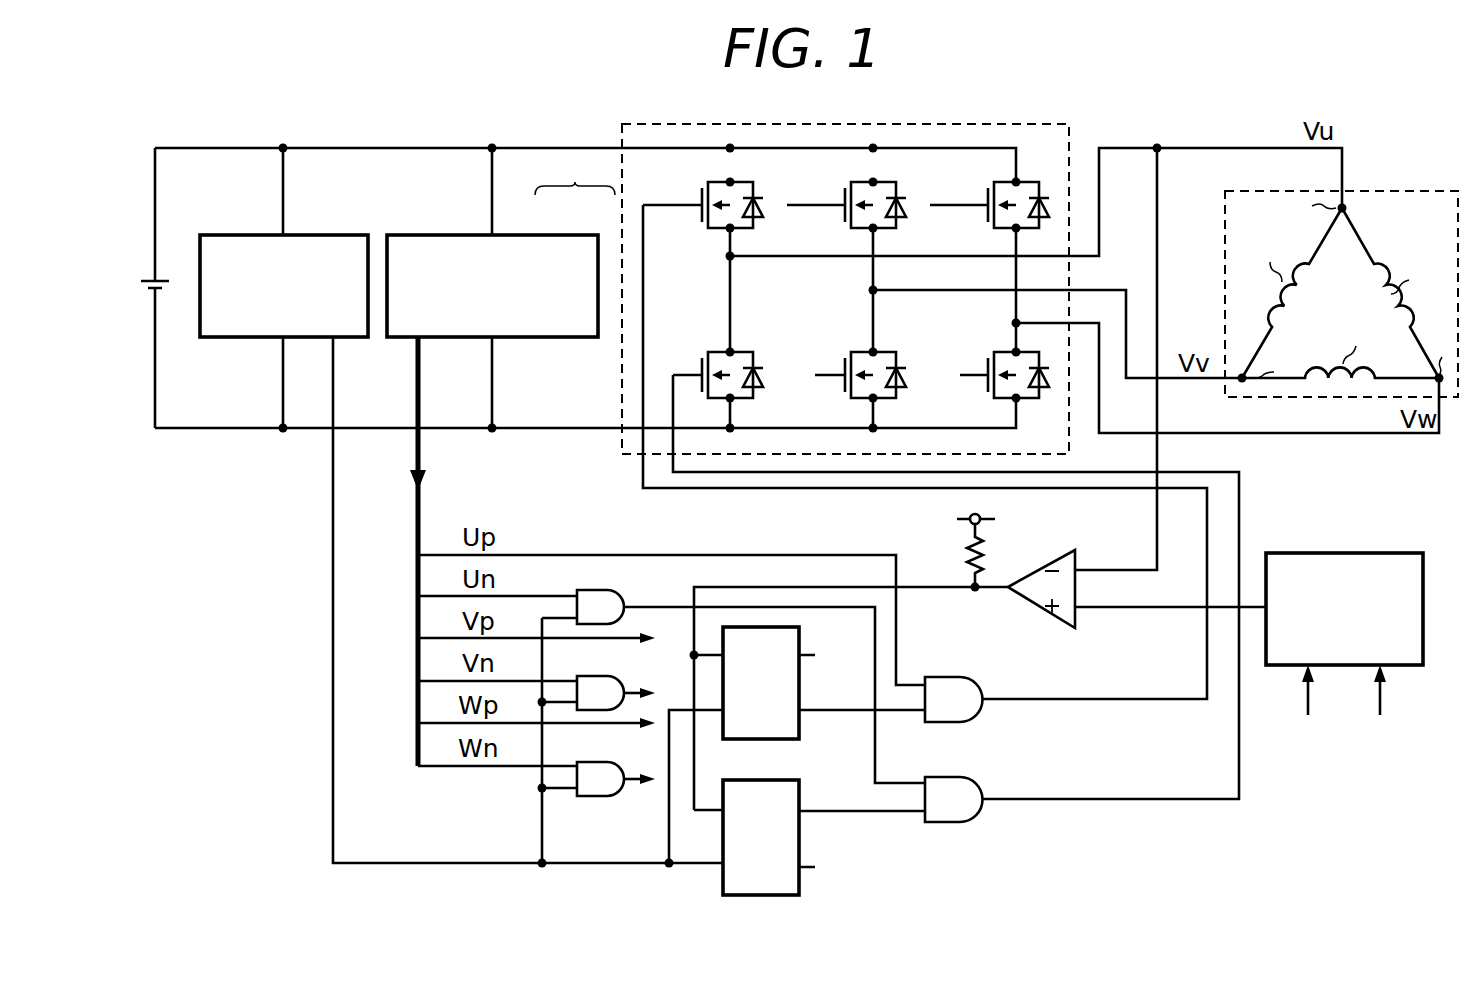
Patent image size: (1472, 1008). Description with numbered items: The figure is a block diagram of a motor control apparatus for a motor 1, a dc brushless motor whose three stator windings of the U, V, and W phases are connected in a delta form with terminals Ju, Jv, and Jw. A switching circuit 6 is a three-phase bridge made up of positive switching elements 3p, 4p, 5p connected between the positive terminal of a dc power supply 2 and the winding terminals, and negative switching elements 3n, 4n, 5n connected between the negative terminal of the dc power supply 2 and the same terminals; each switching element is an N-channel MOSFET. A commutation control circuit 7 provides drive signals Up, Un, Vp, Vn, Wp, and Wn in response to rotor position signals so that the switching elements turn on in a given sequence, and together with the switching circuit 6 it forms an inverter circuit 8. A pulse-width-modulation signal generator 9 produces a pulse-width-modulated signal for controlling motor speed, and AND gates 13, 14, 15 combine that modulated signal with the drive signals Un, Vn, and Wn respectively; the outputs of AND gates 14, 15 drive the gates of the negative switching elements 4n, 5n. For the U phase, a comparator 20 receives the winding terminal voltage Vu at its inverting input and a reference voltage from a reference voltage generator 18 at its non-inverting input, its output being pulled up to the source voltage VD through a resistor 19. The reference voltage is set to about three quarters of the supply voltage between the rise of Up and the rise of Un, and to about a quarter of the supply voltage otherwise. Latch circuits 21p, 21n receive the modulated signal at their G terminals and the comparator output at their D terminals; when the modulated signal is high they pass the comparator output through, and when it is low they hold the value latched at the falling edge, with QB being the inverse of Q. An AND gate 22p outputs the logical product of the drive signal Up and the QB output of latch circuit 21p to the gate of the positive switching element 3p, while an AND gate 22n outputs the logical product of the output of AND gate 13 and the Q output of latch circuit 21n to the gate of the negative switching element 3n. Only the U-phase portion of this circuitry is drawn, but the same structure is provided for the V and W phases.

The motor 1 is at (1415, 192).
The dc power supply 2 is at (157, 281).
The positive switching element 3p is at (702, 190).
The negative switching element 3n is at (702, 360).
The positive switching element 4p is at (844, 190).
The negative switching element 4n is at (844, 360).
The positive switching element 5p is at (987, 190).
The negative switching element 5n is at (987, 360).
The switching circuit 6 is at (622, 225).
The commutation control circuit 7 is at (525, 235).
The inverter circuit 8 is at (575, 182).
The PWM signal generator 9 is at (322, 235).
The AND gate 13 is at (605, 593).
The AND gate 14 is at (605, 679).
The AND gate 15 is at (605, 765).
The reference voltage generator 18 is at (1368, 553).
The resistor 19 is at (964, 559).
The comparator 20 is at (1038, 564).
The latch circuit 21p is at (800, 739).
The latch circuit 21n is at (800, 889).
The AND gate 22p is at (948, 675).
The AND gate 22n is at (948, 775).